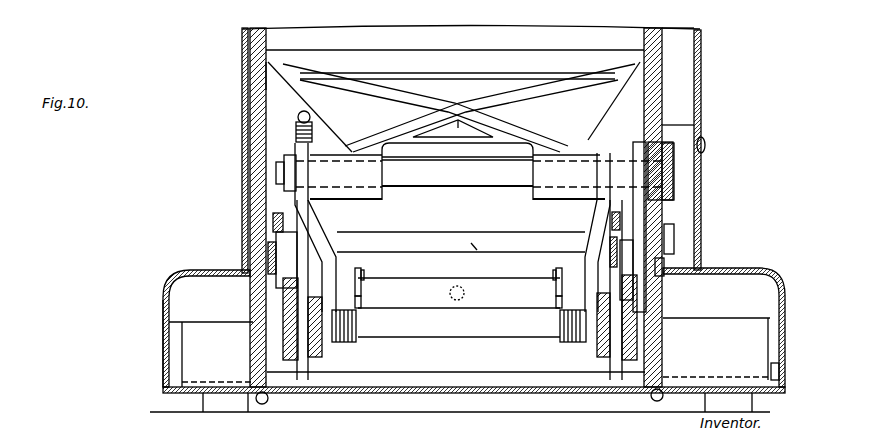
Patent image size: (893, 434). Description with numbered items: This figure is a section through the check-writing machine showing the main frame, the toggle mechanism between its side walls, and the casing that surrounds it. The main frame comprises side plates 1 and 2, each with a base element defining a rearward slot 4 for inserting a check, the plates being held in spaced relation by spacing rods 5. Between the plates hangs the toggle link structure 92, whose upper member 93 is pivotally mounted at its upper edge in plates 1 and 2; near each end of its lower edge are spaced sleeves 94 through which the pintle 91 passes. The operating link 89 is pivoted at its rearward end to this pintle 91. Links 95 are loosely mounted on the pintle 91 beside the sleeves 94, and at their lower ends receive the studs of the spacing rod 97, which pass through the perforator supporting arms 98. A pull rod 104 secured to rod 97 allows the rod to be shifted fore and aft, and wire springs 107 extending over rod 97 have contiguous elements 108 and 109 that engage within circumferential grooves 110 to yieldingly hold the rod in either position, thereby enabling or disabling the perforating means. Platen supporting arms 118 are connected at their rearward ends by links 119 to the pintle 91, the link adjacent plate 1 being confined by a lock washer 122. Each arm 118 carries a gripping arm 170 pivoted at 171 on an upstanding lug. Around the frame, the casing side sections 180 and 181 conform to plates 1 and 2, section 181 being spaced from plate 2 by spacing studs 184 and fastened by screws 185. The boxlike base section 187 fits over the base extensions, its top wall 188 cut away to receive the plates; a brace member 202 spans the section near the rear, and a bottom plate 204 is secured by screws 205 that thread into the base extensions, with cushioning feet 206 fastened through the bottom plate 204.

The side plate 1 is at (252, 134).
The side plate 2 is at (650, 32).
The slot 4 is at (666, 262).
The spacing rod 5 is at (469, 257).
The operating link 89 is at (675, 178).
The pintle 91 is at (457, 176).
The toggle link structure 92 is at (390, 49).
The upper member 93 is at (458, 57).
The sleeve 94 is at (363, 195).
The link 95 is at (328, 228).
The spacing rod 97 is at (426, 284).
The perforator supporting arm 98 is at (318, 352).
The pull rod 104 is at (458, 310).
The wire spring 107 is at (356, 341).
The spring element 108 is at (359, 303).
The spring element 109 is at (358, 283).
The groove 110 is at (390, 290).
The platen supporting arm 118 is at (292, 364).
The link 119 is at (283, 181).
The lock washer 122 is at (283, 166).
The gripping arm 170 is at (272, 247).
The pivot 171 is at (283, 290).
The side section 180 is at (247, 47).
The side section 181 is at (698, 70).
The spacing stud 184 is at (699, 76).
The screw 185 is at (297, 122).
The base section 187 is at (163, 297).
The top wall 188 is at (197, 272).
The brace member 202 is at (510, 391).
The bottom plate 204 is at (433, 371).
The screw 205 is at (264, 405).
The foot 206 is at (213, 402).